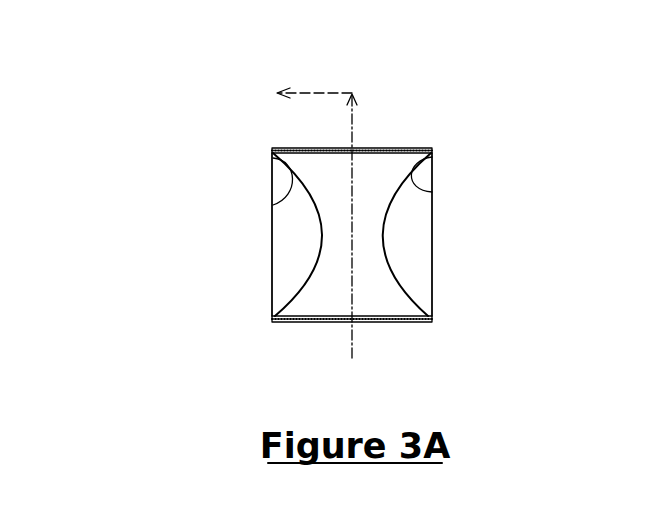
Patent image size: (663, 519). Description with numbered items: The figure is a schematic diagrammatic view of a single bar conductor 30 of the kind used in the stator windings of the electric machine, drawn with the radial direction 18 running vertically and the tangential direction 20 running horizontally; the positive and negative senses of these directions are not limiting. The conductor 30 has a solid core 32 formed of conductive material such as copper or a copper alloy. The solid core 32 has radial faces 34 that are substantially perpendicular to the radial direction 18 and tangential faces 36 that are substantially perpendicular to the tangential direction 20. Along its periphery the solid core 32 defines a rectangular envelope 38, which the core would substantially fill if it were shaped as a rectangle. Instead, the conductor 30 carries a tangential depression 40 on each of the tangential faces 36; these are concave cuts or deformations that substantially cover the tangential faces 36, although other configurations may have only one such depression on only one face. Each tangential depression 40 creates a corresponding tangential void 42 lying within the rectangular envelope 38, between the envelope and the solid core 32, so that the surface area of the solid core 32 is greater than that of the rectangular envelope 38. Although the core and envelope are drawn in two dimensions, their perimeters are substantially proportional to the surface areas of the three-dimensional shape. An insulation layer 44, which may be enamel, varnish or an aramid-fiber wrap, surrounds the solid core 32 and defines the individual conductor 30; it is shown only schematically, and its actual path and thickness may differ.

The conductor 30 is at (134, 116).
The radial direction 18 is at (360, 340).
The tangential direction 20 is at (322, 90).
The solid core 32 is at (367, 165).
The radial faces 34 is at (405, 131).
The tangential faces 36 is at (259, 228).
The rectangular envelope 38 is at (270, 268).
The tangential depression 40 is at (283, 170).
The tangential voids 42 is at (302, 175).
The insulation layer 44 is at (387, 203).